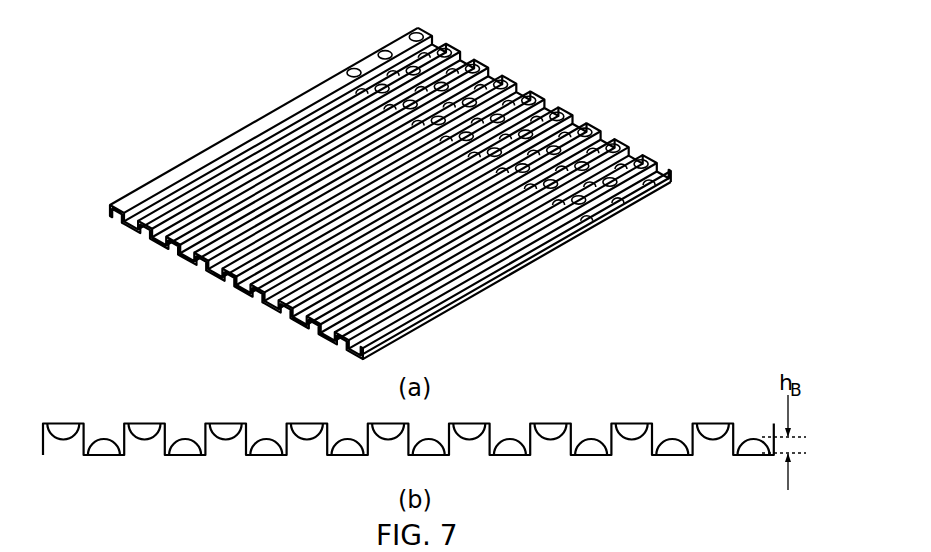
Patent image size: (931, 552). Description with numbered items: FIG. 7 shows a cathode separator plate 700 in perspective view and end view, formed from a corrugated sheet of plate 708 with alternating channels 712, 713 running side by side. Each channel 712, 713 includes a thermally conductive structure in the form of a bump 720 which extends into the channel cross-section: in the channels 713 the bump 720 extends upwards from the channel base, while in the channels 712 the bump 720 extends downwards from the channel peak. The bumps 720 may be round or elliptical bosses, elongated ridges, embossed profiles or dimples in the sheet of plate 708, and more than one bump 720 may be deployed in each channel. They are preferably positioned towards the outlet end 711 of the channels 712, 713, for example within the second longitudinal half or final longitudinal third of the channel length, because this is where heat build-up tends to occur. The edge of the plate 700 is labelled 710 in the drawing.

The separator plate 700 is at (203, 72).
The plate sheet 708 is at (264, 127).
The first ridge surface 710 is at (152, 238).
The outlet end 711 is at (511, 77).
The channel 712 is at (175, 252).
The channel 713 is at (248, 286).
The bump 720 is at (578, 202).